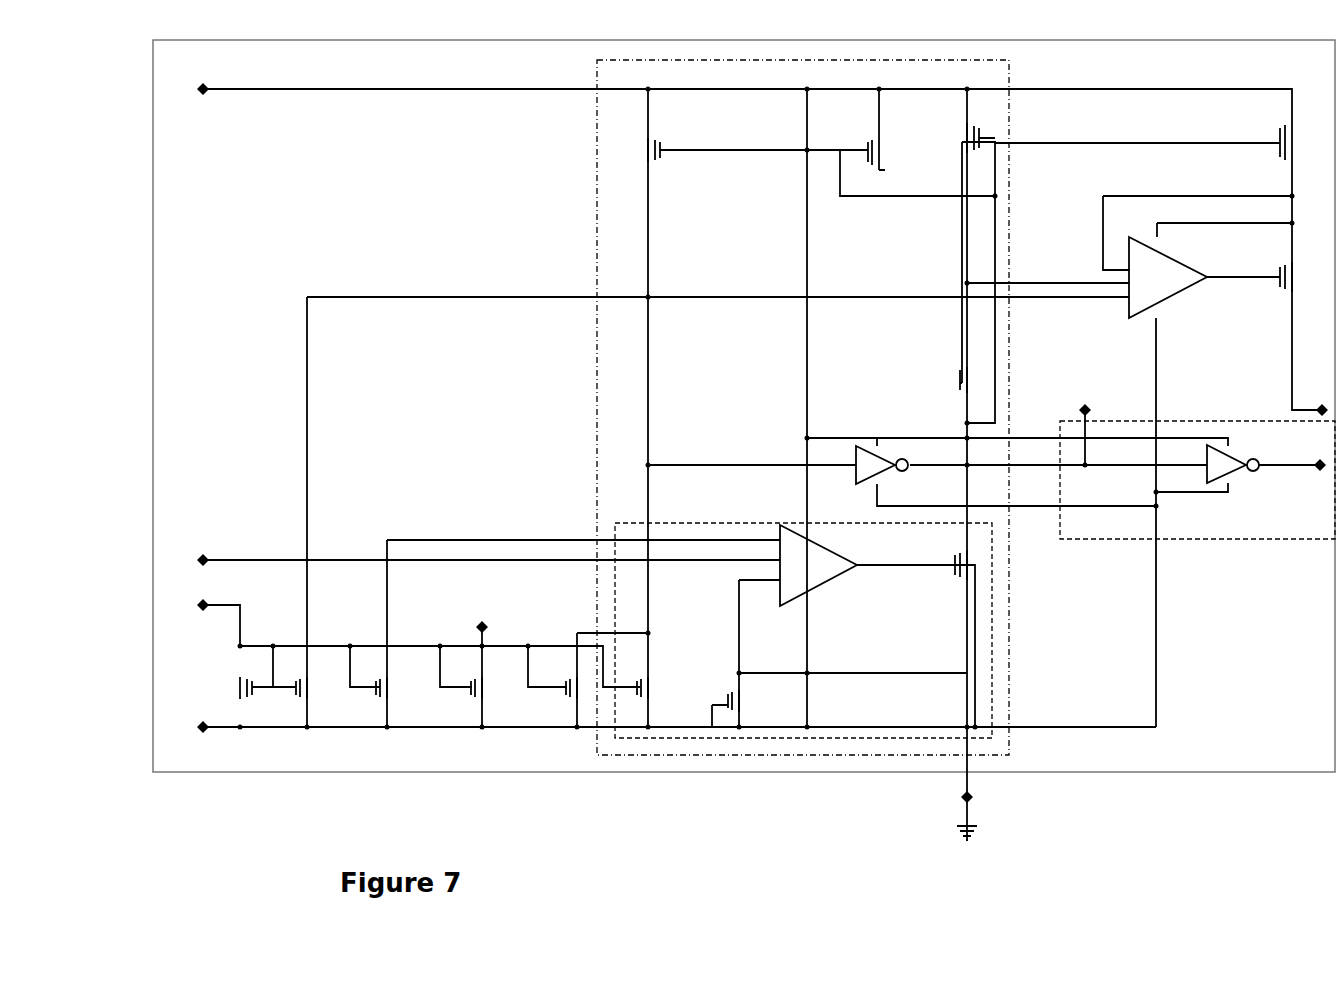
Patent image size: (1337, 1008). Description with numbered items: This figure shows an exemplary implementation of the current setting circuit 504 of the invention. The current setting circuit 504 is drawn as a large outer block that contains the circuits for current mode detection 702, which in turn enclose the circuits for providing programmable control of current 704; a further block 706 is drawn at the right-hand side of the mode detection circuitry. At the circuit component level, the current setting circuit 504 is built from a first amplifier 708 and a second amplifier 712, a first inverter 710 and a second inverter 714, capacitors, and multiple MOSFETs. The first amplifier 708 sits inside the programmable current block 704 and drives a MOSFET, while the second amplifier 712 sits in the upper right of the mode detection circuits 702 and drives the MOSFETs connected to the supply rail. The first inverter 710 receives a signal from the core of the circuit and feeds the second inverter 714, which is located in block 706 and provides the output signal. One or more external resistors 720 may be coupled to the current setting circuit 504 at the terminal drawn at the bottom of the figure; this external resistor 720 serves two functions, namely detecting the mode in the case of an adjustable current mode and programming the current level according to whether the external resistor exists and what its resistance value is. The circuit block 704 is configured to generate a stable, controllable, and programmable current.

The current setting circuit 504 is at (503, 772).
The circuits for current mode detection 702 is at (597, 205).
The circuits for providing programmable control of current 704 is at (992, 650).
The output buffer block 706 is at (1210, 545).
The amplifier A1 708 is at (795, 525).
The inverter 710 is at (862, 440).
The amplifier A2 712 is at (1162, 305).
The inverter 714 is at (1237, 478).
The external resistor 720 is at (975, 800).